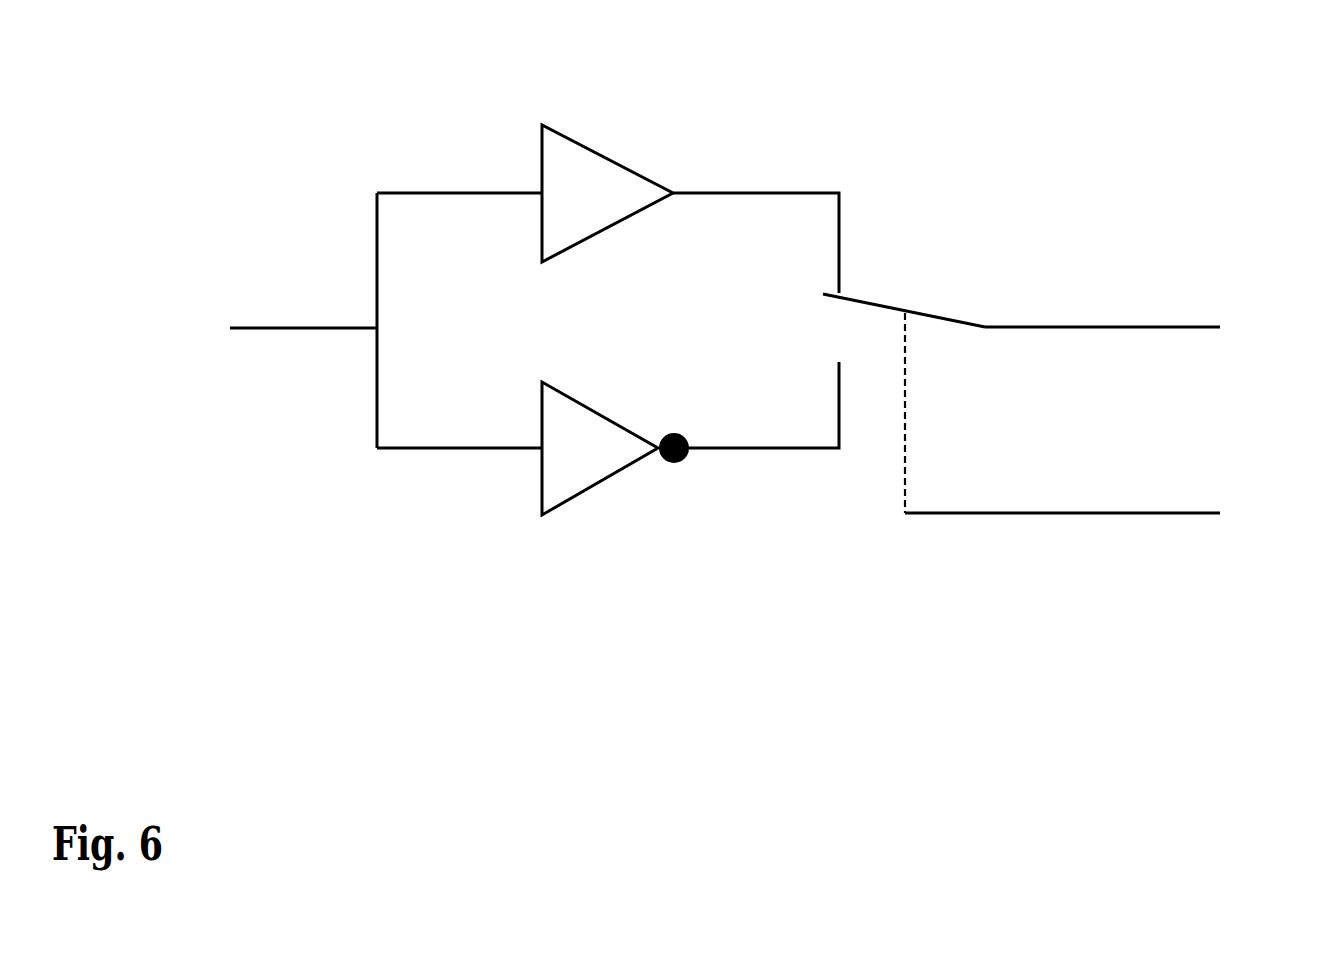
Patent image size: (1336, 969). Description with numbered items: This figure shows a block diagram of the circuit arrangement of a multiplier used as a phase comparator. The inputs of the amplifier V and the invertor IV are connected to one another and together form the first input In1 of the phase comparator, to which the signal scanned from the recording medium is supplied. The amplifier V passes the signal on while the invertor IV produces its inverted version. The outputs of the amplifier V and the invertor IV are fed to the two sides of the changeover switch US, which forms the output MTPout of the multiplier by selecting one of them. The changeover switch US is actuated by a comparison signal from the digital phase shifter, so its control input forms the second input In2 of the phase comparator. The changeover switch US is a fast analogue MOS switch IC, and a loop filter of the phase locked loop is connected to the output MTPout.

The first input In1 is at (254, 309).
The second input In2 is at (1110, 511).
The amplifier V is at (607, 161).
The invertor IV is at (615, 415).
The changeover switch US is at (904, 371).
The output of the multiplier MTPout is at (1156, 290).